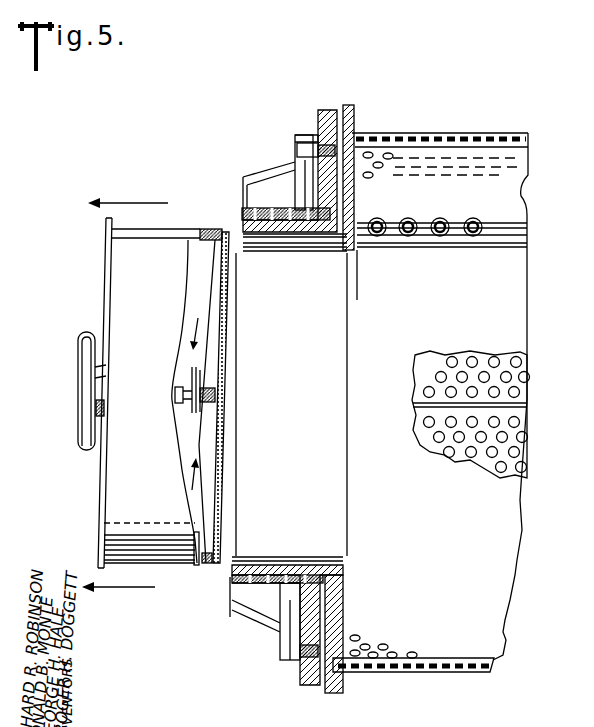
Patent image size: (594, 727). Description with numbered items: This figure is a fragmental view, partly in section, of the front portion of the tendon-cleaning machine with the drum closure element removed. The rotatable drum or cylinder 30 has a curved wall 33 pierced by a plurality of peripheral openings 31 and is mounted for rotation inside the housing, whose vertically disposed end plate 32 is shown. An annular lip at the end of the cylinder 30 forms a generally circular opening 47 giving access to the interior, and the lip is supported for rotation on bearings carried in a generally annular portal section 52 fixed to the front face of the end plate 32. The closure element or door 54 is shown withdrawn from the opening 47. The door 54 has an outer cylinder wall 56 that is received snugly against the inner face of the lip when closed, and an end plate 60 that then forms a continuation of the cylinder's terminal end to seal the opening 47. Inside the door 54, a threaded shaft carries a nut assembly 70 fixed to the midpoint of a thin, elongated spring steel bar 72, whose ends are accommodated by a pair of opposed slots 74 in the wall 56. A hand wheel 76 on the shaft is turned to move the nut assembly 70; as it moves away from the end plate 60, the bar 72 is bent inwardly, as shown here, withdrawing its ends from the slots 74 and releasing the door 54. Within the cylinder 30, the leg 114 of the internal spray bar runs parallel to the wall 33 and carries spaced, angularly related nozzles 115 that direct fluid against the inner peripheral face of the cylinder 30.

The cylinder 30 is at (471, 127).
The peripheral openings 31 is at (397, 134).
The end plate 32 is at (316, 110).
The wall 33 is at (510, 193).
The opening 47 is at (326, 232).
The portal section 52 is at (262, 177).
The door 54 is at (98, 243).
The outer cylinder wall 56 is at (107, 478).
The end plate 60 is at (226, 355).
The nut assembly 70 is at (192, 402).
The bar 72 is at (214, 276).
The slots 74 is at (233, 200).
The hand wheel 76 is at (77, 360).
The leg 114 is at (487, 231).
The nozzles 115 is at (410, 216).